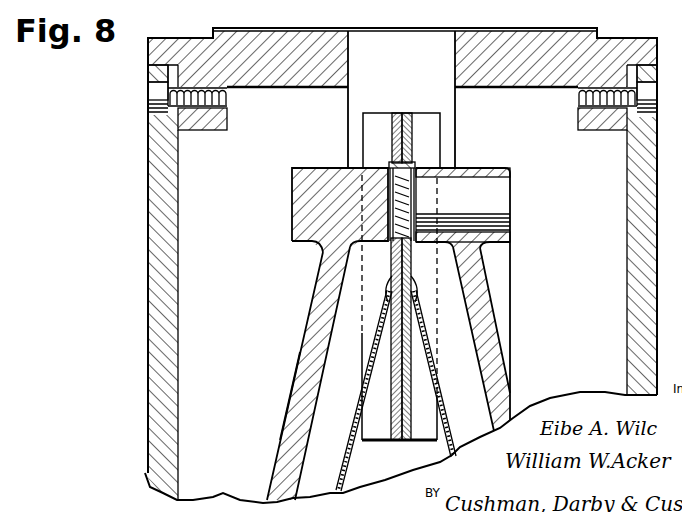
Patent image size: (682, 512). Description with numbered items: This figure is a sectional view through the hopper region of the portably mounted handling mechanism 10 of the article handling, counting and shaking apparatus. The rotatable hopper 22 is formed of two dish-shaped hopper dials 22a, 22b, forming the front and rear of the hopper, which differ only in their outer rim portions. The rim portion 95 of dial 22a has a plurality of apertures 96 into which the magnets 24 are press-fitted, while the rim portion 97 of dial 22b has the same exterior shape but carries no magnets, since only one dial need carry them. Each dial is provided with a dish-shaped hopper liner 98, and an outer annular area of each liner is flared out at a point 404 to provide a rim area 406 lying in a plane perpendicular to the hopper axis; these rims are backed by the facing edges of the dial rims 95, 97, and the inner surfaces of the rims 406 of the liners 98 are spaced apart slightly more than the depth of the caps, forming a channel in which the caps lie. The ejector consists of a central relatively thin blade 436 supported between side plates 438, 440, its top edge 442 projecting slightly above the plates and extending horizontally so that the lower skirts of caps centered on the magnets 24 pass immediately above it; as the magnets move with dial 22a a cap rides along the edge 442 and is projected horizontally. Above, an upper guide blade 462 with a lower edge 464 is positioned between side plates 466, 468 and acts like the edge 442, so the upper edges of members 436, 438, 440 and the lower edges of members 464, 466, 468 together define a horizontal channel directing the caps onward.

The handling mechanism 10 is at (659, 168).
The rotatable hopper 22 is at (274, 455).
The hopper dial 22a is at (511, 315).
The hopper dial 22b is at (310, 307).
The magnets 24 is at (510, 216).
The rim portion 95 is at (502, 245).
The apertures 96 is at (497, 178).
The rim portion 97 is at (293, 245).
The hopper liners 98 is at (359, 397).
The flare point 404 is at (372, 330).
The rim area 406 is at (386, 262).
The ejector blade 436 is at (407, 372).
The side plate 438 is at (410, 388).
The side plate 440 is at (391, 372).
The top edge 442 is at (416, 219).
The upper guide blade 462 is at (407, 137).
The lower edge 464 is at (410, 178).
The side plate 466 is at (410, 115).
The side plate 468 is at (400, 113).